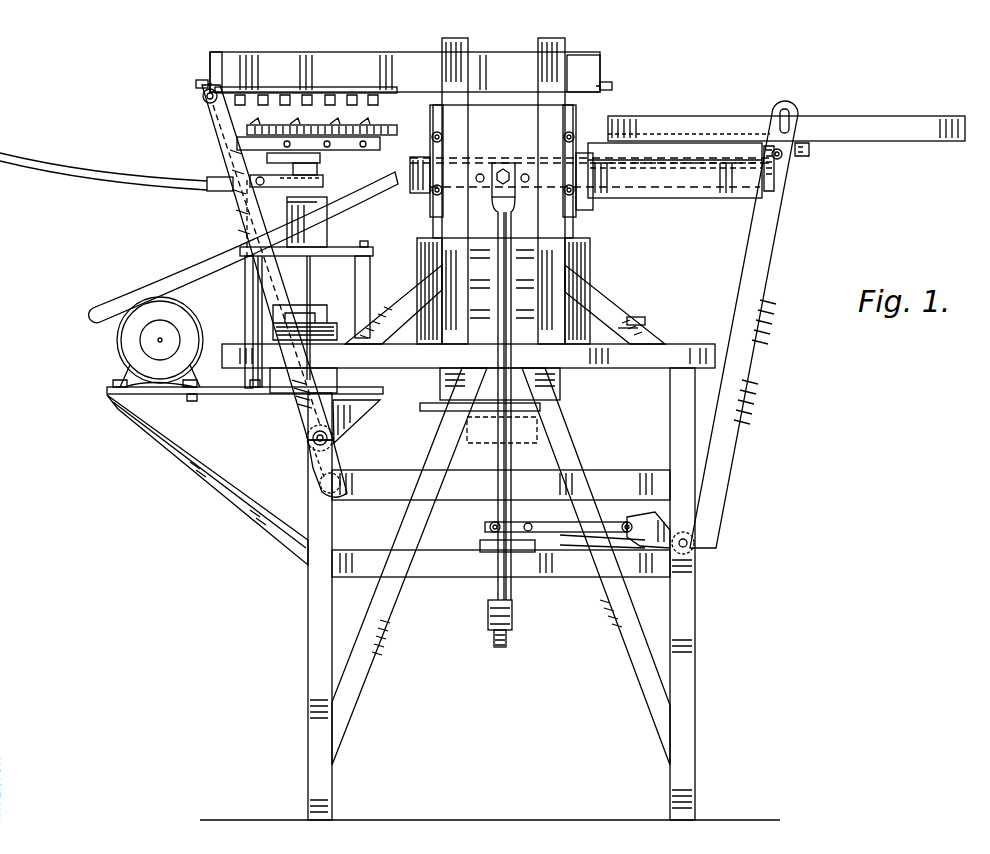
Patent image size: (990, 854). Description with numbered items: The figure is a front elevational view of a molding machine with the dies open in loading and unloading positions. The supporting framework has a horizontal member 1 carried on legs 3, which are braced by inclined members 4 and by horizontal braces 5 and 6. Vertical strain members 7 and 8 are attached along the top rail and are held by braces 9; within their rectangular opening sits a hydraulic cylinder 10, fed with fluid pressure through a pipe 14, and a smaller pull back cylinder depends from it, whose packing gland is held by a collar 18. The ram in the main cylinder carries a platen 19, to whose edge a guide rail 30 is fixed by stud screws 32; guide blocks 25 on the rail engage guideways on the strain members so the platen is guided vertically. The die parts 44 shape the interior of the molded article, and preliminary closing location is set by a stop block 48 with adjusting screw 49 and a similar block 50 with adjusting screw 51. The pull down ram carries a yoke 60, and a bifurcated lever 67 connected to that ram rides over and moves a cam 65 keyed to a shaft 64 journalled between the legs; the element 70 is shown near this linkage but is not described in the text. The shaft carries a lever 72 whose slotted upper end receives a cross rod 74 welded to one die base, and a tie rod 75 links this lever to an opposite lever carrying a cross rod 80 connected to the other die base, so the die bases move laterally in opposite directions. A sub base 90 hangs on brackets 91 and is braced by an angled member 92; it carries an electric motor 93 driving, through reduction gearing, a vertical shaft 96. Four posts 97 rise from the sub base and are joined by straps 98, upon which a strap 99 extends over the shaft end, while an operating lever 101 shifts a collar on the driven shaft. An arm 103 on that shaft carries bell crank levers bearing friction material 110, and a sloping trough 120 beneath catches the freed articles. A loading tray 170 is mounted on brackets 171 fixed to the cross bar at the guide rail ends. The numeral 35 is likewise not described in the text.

The horizontal member 1 is at (632, 370).
The leg 3 is at (318, 662).
The inclined member 4 is at (365, 660).
The horizontal brace 5 is at (459, 567).
The horizontal brace 6 is at (483, 542).
The strain member 7 is at (470, 48).
The strain member 8 is at (565, 48).
The brace 9 is at (407, 298).
The hydraulic cylinder 10 is at (624, 320).
The pipe 14 is at (644, 325).
The collar 18 is at (467, 438).
The platen 19 is at (556, 421).
The guide block 25 is at (591, 199).
The guide rail 30 is at (690, 185).
The stud screw 32 is at (523, 174).
The top beam 35 is at (245, 54).
The die part 44 is at (350, 93).
The stop block 48 is at (410, 178).
The adjusting screw 49 is at (428, 170).
The block 50 is at (210, 70).
The adjusting screw 51 is at (196, 85).
The yoke 60 is at (510, 610).
The shaft 64 is at (688, 544).
The cam 65 is at (670, 528).
The lever 67 is at (606, 510).
The rod 70 is at (610, 547).
The lever 72 is at (758, 271).
The cross rod 74 is at (780, 158).
The tie rod 75 is at (391, 487).
The cross rod 80 is at (210, 100).
The sub base 90 is at (252, 395).
The bracket 91 is at (348, 412).
The bracing member 92 is at (169, 453).
The electric motor 93 is at (118, 348).
The shaft 96 is at (312, 293).
The post 97 is at (313, 280).
The strap 98 is at (367, 255).
The strap 99 is at (330, 221).
The operating lever 101 is at (205, 183).
The arm 103 is at (268, 157).
The friction material 110 is at (360, 114).
The sloping trough 120 is at (178, 274).
The tray-like structure 170 is at (846, 117).
The bracket 171 is at (804, 158).